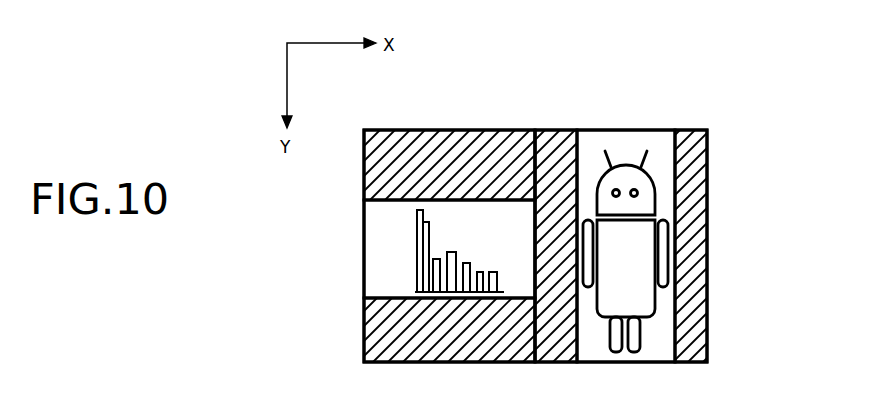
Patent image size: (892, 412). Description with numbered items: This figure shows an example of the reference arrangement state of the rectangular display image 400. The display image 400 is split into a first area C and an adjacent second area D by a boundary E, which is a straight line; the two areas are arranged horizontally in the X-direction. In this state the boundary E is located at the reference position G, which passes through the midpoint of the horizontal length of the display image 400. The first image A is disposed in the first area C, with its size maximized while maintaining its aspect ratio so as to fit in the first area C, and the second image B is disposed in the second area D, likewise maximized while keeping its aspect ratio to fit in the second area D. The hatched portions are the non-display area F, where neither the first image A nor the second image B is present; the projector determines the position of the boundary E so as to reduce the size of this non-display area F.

The display image 400 is at (707, 152).
The first image A is at (380, 229).
The second image B is at (660, 188).
The first area C is at (452, 133).
The second area D is at (690, 232).
The boundary E is at (535, 155).
The non-display area F is at (378, 183).
The reference position G is at (535, 122).